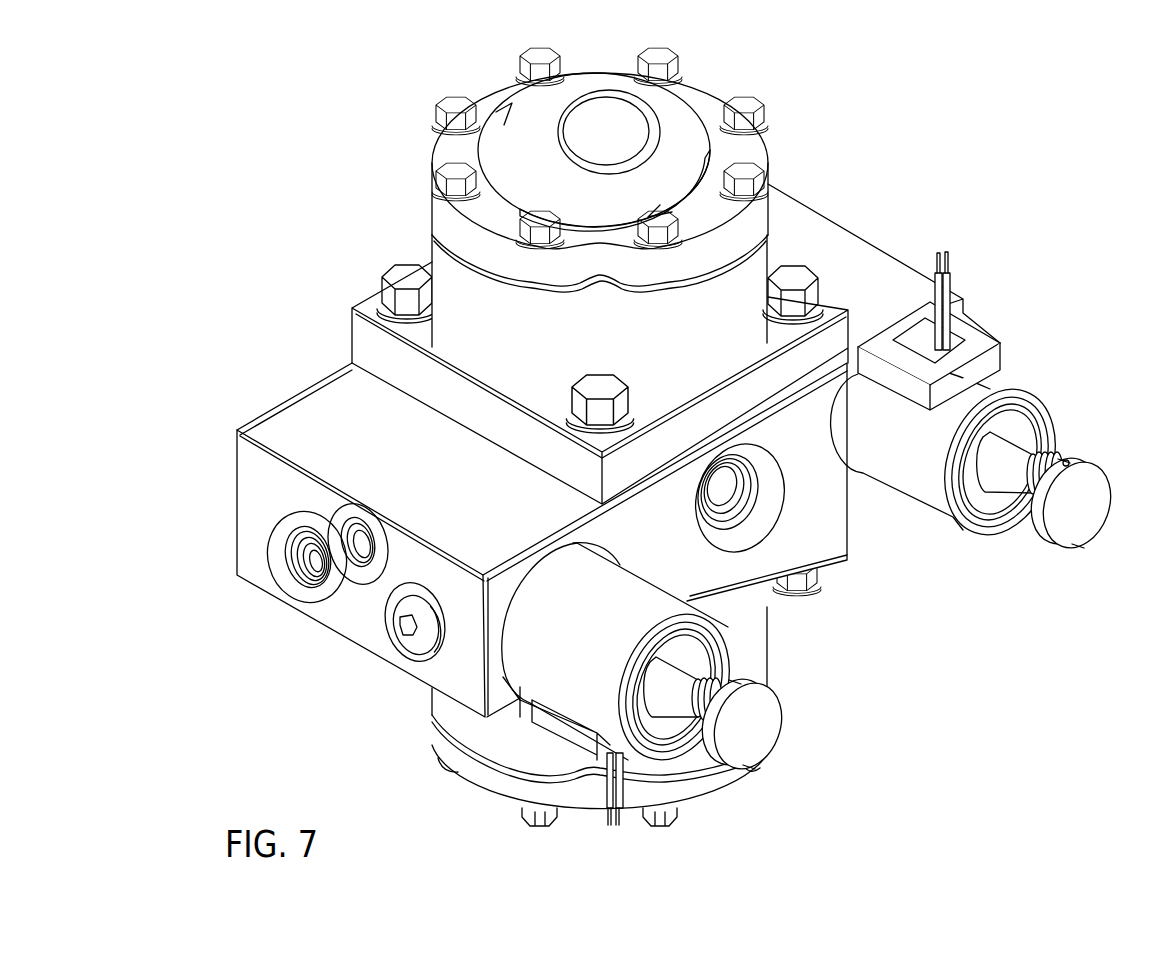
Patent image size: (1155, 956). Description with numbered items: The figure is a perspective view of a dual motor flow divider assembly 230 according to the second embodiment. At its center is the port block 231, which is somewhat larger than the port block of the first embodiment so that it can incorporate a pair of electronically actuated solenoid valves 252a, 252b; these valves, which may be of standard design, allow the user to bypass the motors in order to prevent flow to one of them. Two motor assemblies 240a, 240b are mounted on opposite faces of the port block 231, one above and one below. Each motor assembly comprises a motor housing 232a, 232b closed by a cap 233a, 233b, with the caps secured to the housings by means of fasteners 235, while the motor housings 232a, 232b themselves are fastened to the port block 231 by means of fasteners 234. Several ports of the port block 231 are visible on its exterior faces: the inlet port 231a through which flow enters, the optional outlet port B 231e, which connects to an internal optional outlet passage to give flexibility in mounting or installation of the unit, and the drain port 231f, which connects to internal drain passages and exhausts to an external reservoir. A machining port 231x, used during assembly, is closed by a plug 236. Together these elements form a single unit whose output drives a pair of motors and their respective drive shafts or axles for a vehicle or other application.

The flow divider assembly 230 is at (176, 104).
The port block 231 is at (434, 472).
The inlet port 231a is at (757, 492).
The optional outlet port B 231e is at (298, 578).
The drain port 231f is at (362, 563).
The machining port 231x is at (435, 647).
The motor housing 232a is at (621, 337).
The motor housing 232b is at (531, 746).
The cap 233a is at (553, 186).
The cap 233b is at (476, 772).
The fasteners 234 is at (397, 275).
The fasteners 235 is at (455, 100).
The plug 236 is at (397, 632).
The motor assembly 240a is at (381, 201).
The motor assembly 240b is at (396, 744).
The solenoid valve 252a is at (925, 447).
The solenoid valve 252b is at (603, 661).